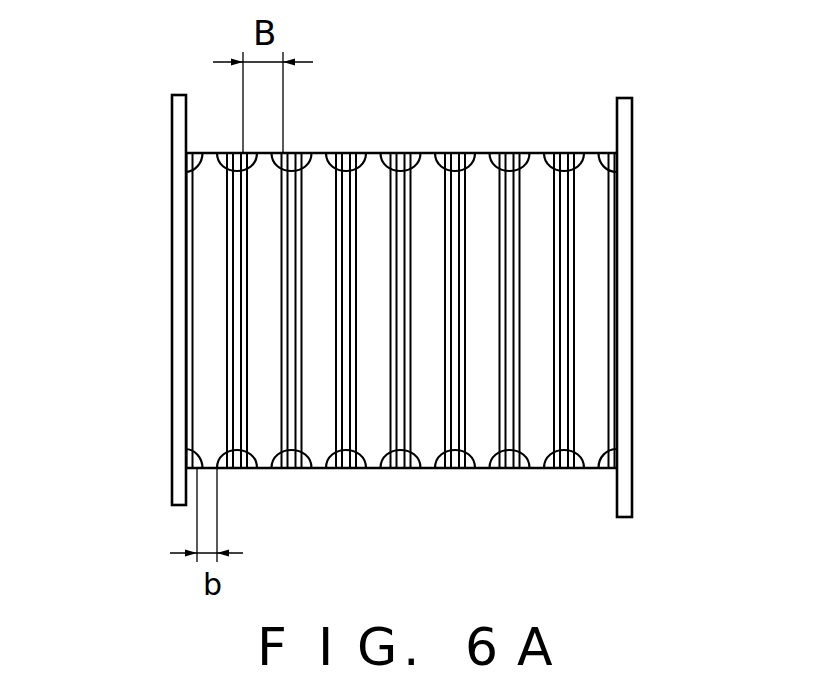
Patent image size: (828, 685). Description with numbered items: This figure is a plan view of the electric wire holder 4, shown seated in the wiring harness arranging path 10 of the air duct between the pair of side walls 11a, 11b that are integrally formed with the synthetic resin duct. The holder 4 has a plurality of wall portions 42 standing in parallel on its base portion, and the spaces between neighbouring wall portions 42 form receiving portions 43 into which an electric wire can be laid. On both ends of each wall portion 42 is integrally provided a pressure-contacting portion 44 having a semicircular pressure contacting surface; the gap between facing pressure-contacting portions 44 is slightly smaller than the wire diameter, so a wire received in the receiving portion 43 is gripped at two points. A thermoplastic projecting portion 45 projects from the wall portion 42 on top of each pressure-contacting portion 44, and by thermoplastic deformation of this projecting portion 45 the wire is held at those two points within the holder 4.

The electric wire holder 4 is at (527, 108).
The wiring harness arranging path 10 is at (563, 485).
The side wall 11a is at (630, 287).
The side wall 11b is at (173, 248).
The wall portion 42 is at (513, 215).
The receiving portion 43 is at (367, 423).
The pressure-contacting portion 44 is at (436, 469).
The projecting portion 45 is at (388, 153).